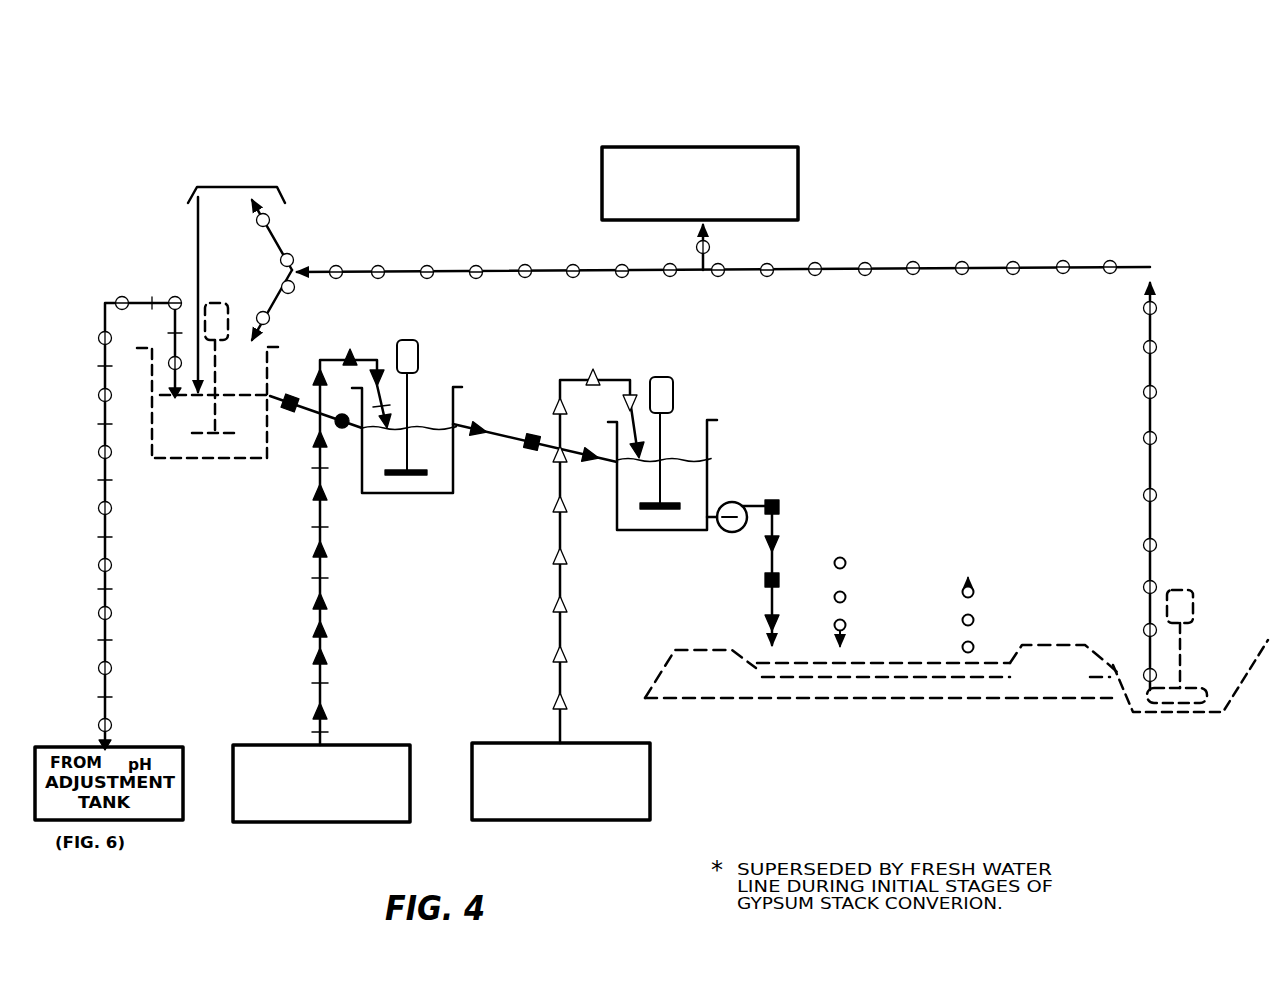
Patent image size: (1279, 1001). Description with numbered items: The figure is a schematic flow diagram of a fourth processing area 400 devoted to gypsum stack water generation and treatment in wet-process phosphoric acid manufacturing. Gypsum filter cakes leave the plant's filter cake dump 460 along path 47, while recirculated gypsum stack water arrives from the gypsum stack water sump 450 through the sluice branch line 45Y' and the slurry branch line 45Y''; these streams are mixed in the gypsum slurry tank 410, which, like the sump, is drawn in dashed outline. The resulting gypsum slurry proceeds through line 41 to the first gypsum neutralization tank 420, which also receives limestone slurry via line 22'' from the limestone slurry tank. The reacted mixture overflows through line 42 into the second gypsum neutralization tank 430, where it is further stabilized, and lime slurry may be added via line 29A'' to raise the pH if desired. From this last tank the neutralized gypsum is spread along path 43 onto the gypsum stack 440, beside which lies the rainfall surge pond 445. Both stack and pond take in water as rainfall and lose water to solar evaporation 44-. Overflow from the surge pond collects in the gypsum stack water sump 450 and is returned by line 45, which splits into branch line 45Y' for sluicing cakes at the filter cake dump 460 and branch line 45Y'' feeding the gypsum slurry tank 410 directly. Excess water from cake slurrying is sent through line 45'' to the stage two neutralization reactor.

The fourth processing area 400 is at (479, 113).
The filter cake dump 460 is at (284, 193).
The path 47 is at (199, 220).
The branch line 45Y' is at (307, 235).
The branch line 45Y'' is at (252, 305).
The line 45 is at (747, 457).
The line 45'' is at (700, 208).
The gypsum slurry transfer line 41 is at (298, 396).
The gypsum slurry tank 410 is at (268, 450).
The gypsum neutralization tank no. 1 420 is at (454, 478).
The line 42 is at (488, 412).
The gypsum neutralization tank no. 2 430 is at (712, 500).
The path 43 is at (768, 588).
The solar evaporation 44- is at (969, 594).
The rainfall surge pond 445 is at (910, 672).
The gypsum stack 440 is at (650, 690).
The gypsum stack water sump 450 is at (1220, 668).
The line 22'' is at (313, 585).
The line 29A'' is at (560, 609).